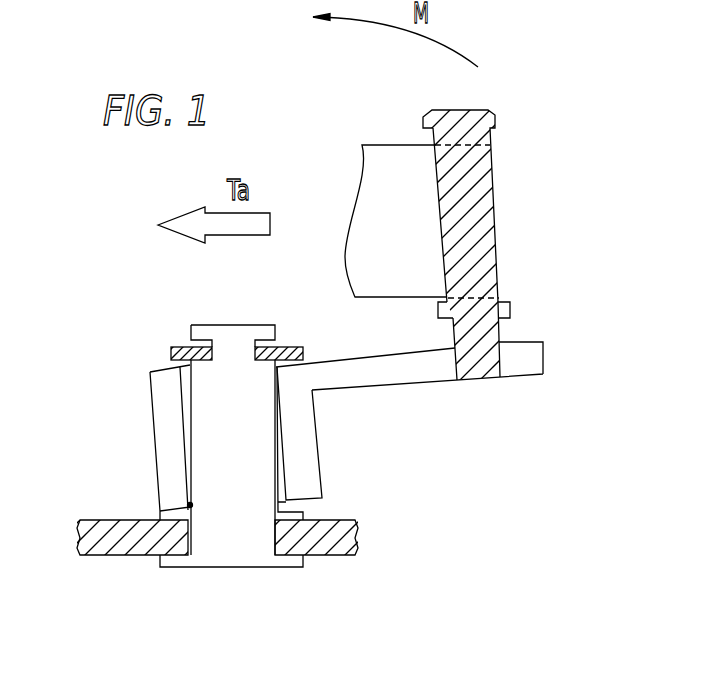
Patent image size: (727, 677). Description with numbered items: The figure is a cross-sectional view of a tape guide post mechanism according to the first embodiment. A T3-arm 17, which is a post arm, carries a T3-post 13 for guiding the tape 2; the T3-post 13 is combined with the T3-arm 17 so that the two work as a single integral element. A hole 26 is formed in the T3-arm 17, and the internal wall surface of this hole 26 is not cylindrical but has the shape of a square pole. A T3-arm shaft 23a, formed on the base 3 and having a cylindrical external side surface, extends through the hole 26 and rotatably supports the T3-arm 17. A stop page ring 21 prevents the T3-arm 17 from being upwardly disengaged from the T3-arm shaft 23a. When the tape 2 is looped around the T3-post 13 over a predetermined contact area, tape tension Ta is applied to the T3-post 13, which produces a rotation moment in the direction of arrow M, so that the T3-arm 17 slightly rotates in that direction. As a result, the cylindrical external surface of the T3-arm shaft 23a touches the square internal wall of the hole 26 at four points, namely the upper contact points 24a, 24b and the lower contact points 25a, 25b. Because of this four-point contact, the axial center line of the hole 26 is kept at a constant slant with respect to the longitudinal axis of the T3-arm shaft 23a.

The tape 2 is at (393, 167).
The T3-post 13 is at (498, 247).
The T3-arm 17 is at (409, 431).
The stop page ring 21 is at (182, 347).
The T3-arm shaft 23a is at (212, 410).
The upper contact point 24a is at (331, 341).
The upper contact point 24b is at (276, 367).
The lower contact point 25a is at (116, 482).
The lower contact point 25b is at (190, 505).
The hole 26 is at (287, 478).
The base 3 is at (332, 540).